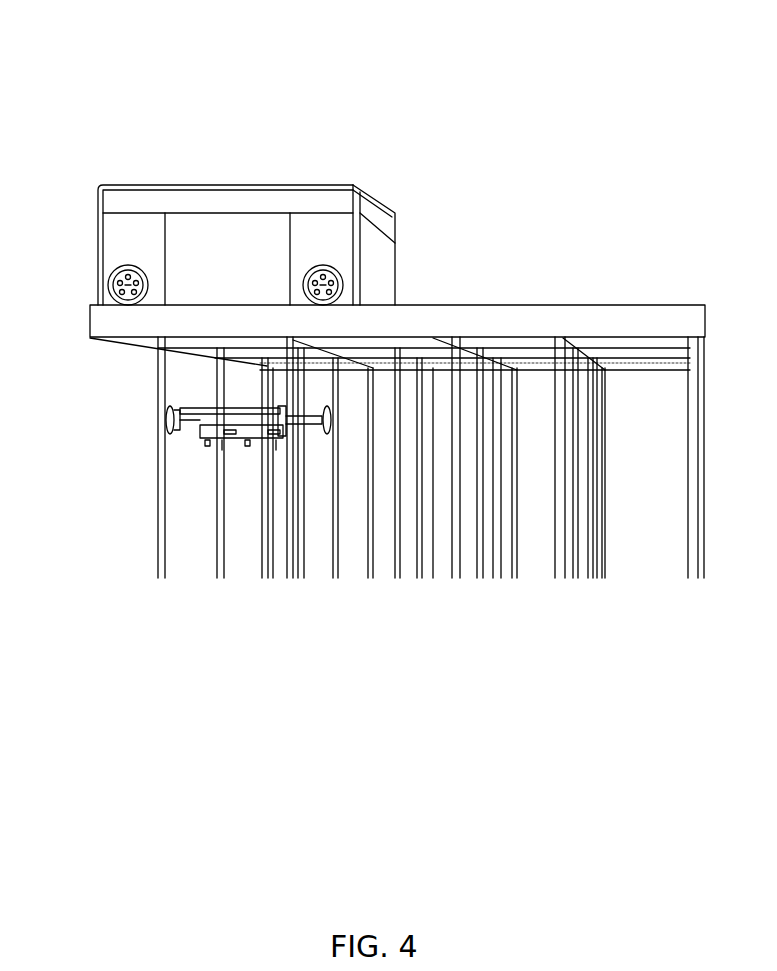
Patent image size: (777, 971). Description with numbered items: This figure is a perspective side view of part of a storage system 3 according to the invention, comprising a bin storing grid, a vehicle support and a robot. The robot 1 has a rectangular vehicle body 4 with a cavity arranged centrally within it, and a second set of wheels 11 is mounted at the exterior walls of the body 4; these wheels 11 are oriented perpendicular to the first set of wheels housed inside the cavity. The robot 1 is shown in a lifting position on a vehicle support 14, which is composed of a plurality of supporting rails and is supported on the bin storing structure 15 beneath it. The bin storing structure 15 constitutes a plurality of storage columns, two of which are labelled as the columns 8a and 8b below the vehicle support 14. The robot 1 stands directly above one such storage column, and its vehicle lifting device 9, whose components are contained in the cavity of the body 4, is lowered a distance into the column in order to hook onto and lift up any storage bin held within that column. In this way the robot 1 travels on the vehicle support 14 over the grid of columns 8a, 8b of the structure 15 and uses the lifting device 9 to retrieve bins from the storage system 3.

The robot 1 is at (257, 161).
The storage system 3 is at (566, 95).
The vehicle body 4 is at (77, 227).
The first shelf column 8a is at (225, 457).
The second shelf column 8b is at (379, 457).
The vehicle lifting device 9 is at (193, 422).
The second set of wheels 11 is at (118, 280).
The vehicle support 14 is at (84, 326).
The bin storing structure 15 is at (114, 442).